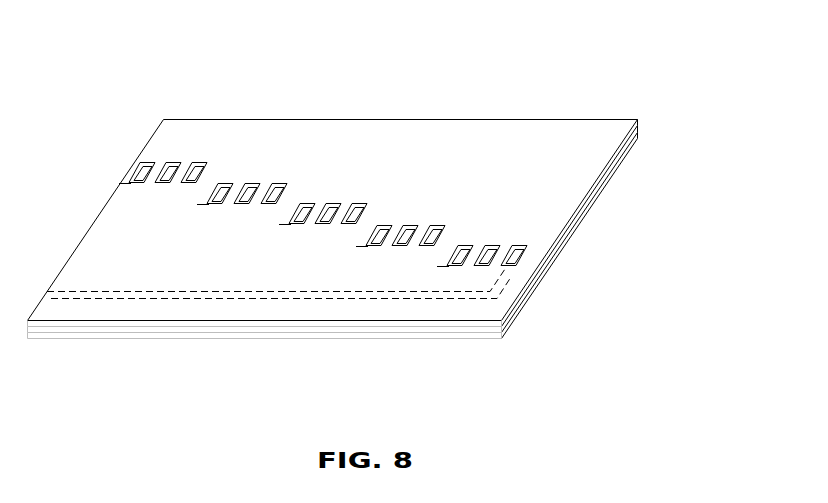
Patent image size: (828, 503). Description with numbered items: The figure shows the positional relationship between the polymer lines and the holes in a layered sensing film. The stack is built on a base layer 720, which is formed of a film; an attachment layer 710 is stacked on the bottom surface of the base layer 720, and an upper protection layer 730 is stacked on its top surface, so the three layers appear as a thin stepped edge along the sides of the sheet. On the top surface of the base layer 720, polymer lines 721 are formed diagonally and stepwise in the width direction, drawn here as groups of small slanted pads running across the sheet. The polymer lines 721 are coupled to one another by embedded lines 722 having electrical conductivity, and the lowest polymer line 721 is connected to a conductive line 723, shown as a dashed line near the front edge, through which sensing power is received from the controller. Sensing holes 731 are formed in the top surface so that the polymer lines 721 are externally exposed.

The attachment layer 710 is at (575, 222).
The base layer 720 is at (588, 197).
The upper protection layer 730 is at (598, 157).
The polymer line 721 is at (283, 195).
The embedded line 722 is at (370, 225).
The conductive line 723 is at (415, 298).
The sensing hole 731 is at (277, 183).